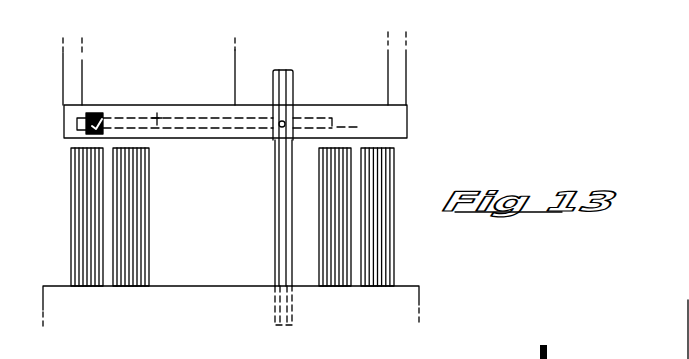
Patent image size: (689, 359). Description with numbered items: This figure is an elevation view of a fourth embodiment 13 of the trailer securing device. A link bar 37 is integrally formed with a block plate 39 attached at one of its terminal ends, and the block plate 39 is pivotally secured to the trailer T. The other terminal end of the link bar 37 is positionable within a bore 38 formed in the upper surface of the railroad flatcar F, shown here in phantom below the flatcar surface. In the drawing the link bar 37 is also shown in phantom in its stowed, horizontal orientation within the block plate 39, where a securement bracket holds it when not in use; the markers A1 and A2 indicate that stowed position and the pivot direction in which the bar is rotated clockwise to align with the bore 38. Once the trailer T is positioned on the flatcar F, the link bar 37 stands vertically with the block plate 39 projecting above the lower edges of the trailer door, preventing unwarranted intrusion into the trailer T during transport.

The tool assembly 13 is at (307, 64).
The link bar 37 is at (203, 123).
The bore 38 is at (275, 322).
The block plate 39 is at (293, 88).
The trailer T is at (398, 78).
The railroad flatcar F is at (408, 300).
The first position marker A1 is at (100, 115).
The second position marker A2 is at (192, 79).